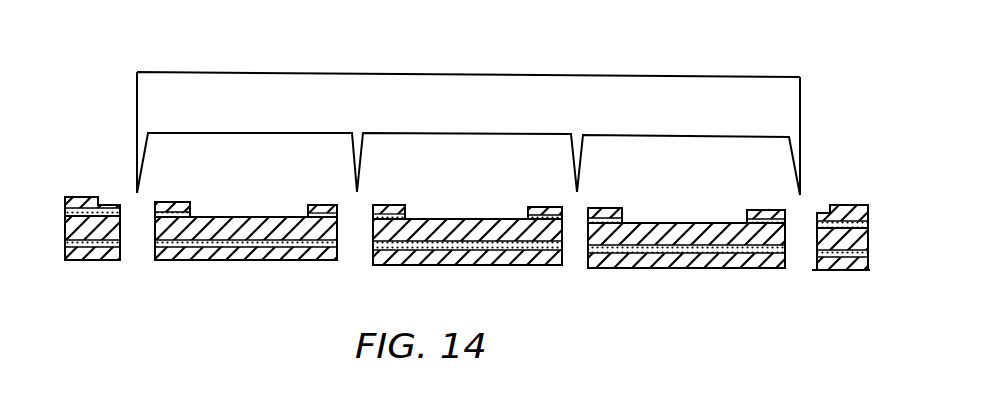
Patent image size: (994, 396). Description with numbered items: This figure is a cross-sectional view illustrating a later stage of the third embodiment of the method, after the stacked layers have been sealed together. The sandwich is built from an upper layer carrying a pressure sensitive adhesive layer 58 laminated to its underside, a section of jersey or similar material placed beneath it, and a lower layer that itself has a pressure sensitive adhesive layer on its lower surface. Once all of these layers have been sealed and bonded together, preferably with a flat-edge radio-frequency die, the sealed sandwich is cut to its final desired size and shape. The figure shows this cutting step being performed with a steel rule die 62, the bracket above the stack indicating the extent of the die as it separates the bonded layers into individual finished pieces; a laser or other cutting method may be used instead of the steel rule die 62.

The steel rule die 62 is at (228, 93).
The pressure sensitive adhesive layer 58 is at (63, 213).